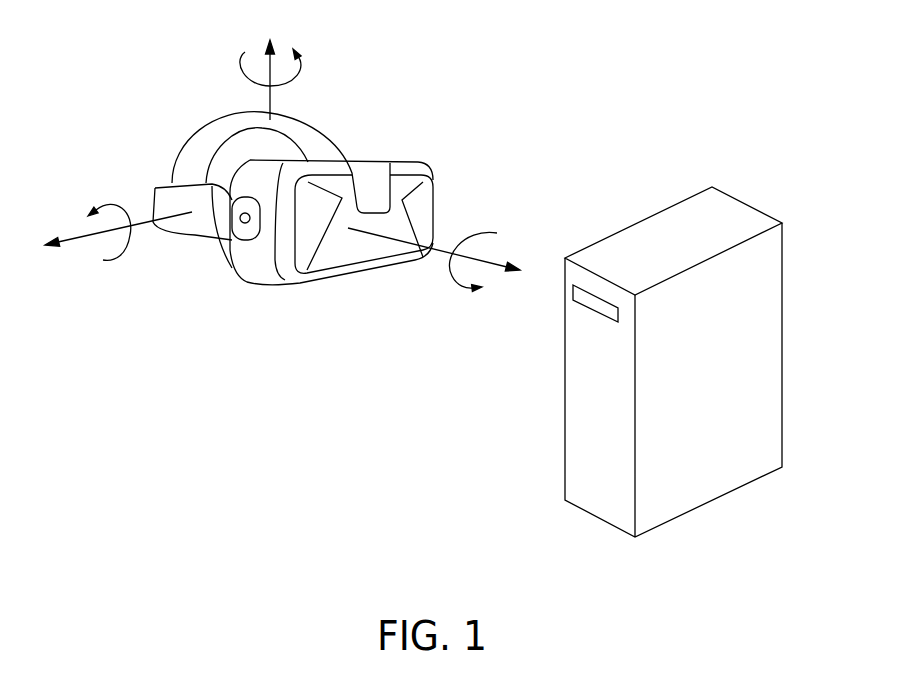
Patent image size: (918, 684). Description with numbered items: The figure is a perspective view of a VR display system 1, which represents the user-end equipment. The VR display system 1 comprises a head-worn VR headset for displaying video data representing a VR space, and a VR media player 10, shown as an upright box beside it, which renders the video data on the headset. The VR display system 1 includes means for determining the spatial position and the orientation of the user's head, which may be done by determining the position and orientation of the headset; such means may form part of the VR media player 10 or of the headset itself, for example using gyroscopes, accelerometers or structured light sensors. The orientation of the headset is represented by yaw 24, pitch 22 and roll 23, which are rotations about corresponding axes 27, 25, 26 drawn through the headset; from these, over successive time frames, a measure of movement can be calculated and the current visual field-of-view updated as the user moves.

The VR display system 1 is at (419, 277).
The VR media player 10 is at (722, 495).
The pitch 22 is at (127, 257).
The roll 23 is at (500, 243).
The yaw 24 is at (247, 53).
The pitch axis 25 is at (70, 235).
The roll axis 26 is at (438, 255).
The yaw axis 27 is at (273, 97).